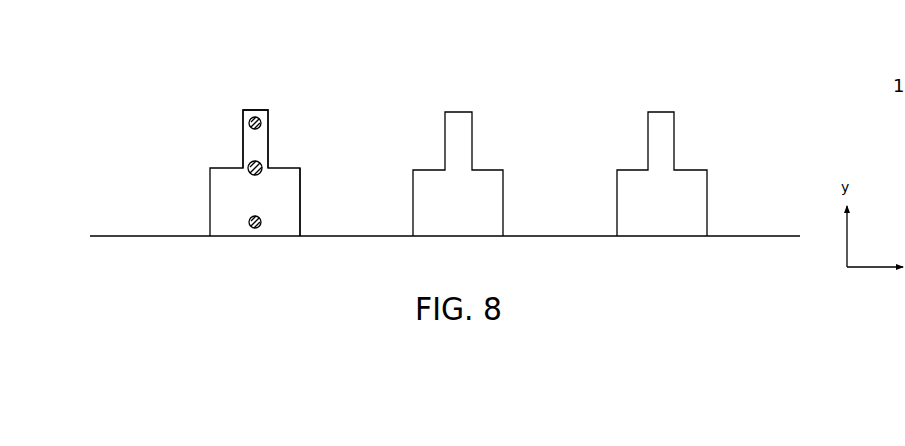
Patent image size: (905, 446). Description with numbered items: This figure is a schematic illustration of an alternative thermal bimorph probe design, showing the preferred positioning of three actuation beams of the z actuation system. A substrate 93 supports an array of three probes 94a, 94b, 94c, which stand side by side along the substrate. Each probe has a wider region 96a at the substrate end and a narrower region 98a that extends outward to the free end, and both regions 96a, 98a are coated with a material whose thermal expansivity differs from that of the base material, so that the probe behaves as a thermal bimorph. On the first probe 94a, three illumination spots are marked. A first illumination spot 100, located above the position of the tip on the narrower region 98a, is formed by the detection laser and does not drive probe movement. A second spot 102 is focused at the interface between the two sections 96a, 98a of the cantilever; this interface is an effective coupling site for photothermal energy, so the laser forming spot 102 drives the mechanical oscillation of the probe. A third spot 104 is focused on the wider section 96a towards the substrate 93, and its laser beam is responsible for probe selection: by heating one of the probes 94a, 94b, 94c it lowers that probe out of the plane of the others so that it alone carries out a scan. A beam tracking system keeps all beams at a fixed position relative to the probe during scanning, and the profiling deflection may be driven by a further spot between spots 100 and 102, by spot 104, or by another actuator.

The substrate 93 is at (123, 233).
The probe 94a is at (166, 166).
The probe 94b is at (414, 127).
The probe 94c is at (629, 129).
The wider region 96a is at (300, 207).
The narrower region 98a is at (268, 130).
The first illumination spot 100 is at (253, 112).
The second spot 102 is at (243, 166).
The third spot 104 is at (256, 233).